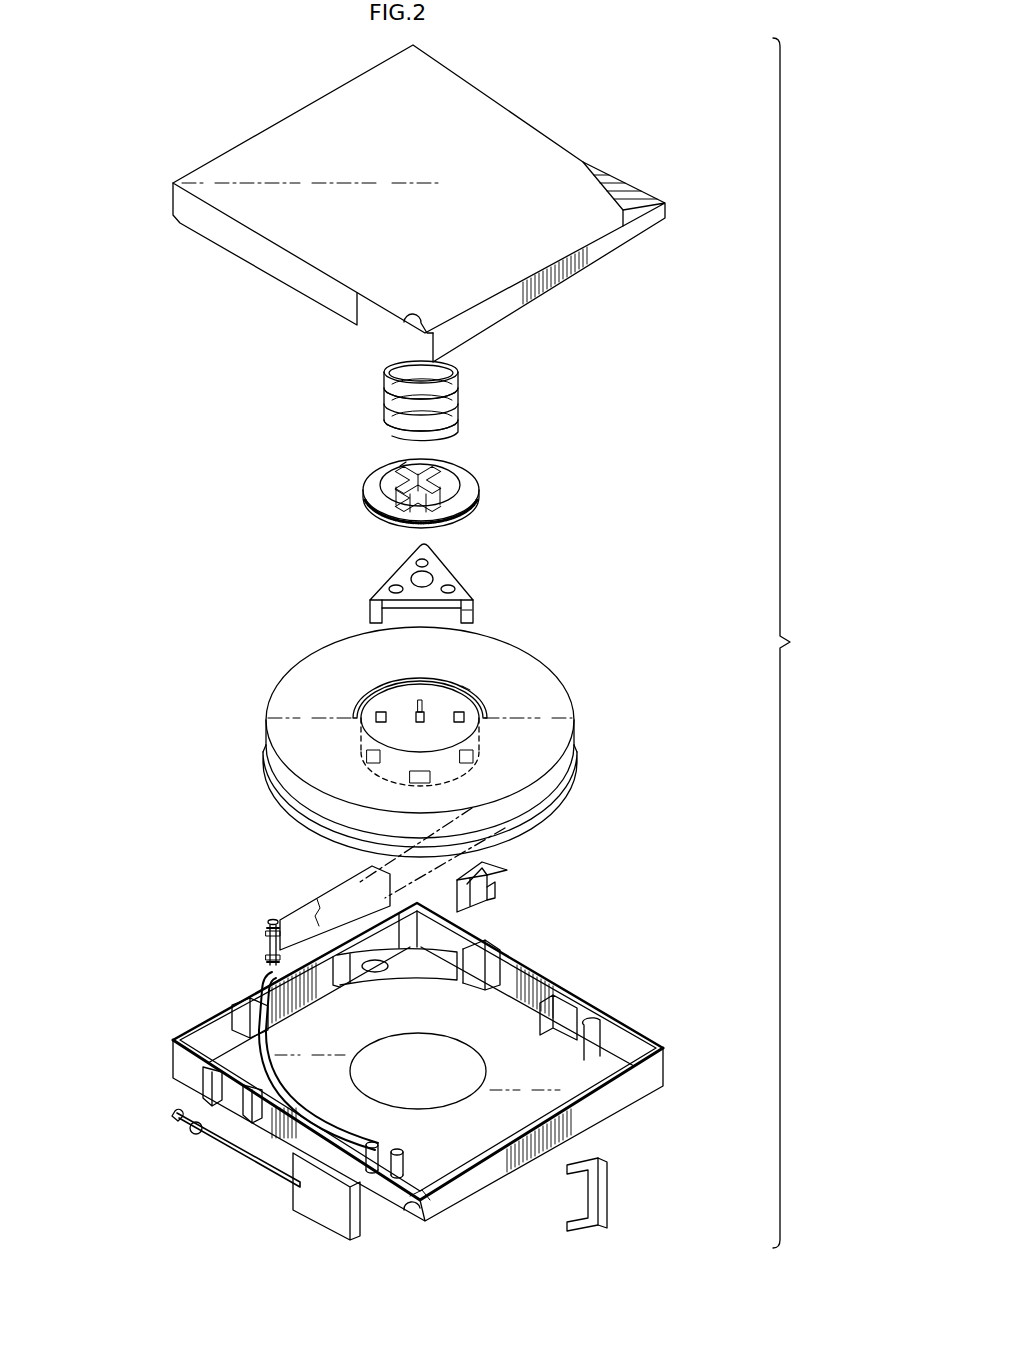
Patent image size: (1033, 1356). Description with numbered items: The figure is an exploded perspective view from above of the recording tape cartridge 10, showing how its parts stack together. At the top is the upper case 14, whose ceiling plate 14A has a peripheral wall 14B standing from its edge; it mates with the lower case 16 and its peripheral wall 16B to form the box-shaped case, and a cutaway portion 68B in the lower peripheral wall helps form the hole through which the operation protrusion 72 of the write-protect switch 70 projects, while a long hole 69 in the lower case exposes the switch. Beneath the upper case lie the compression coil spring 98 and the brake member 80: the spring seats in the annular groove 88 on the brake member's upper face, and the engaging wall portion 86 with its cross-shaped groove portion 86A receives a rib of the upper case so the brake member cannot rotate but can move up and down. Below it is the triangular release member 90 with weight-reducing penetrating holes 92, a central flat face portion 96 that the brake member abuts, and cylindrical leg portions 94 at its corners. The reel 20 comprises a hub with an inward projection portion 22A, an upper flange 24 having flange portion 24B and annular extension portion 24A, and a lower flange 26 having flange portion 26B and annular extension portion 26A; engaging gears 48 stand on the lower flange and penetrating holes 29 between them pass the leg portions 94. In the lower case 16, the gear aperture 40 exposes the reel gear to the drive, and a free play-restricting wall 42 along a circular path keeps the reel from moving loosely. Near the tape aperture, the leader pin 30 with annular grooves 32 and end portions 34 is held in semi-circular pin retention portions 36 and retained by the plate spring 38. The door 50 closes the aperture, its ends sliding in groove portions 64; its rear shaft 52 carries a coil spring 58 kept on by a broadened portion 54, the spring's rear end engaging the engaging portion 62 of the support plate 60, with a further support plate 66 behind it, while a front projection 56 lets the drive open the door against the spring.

The recording tape cartridge 10 is at (646, 116).
The upper case 14 is at (648, 190).
The ceiling plate 14A is at (516, 132).
The peripheral wall 14B is at (245, 245).
The pin retention portions 36 is at (404, 330).
The compression coil spring 98 is at (456, 374).
The brake member 80 is at (478, 470).
The annular groove 88 is at (390, 482).
The engaging wall portion 86 is at (440, 472).
The groove portion 86A is at (402, 466).
The release member 90 is at (466, 582).
The flat face portion 96 is at (413, 575).
The penetrating holes 92 is at (428, 562).
The leg portions 94 is at (473, 616).
The reel 20 is at (580, 686).
The upper flange 24 is at (285, 662).
The annular extension portion 24A is at (446, 690).
The flange portion 24B is at (540, 672).
The lower flange 26 is at (580, 776).
The annular extension portion 26A is at (420, 710).
The flange portion 26B is at (272, 764).
The projection portion 22A is at (380, 702).
The penetrating holes 29 is at (416, 698).
The engaging gears 48 is at (470, 694).
The write-protect switch 70 is at (506, 892).
The operation protrusion 72 is at (492, 866).
The cutaway portion 68B is at (358, 884).
The leader pin 30 is at (266, 940).
The annular grooves 32 is at (266, 927).
The end portions 34 is at (272, 918).
The lower case 16 is at (668, 1056).
The peripheral wall 16B is at (182, 1060).
The gear aperture 40 is at (476, 1010).
The support plate 60 is at (272, 1076).
The engaging portion 62 is at (270, 1046).
The free play-restricting wall 42 is at (245, 1016).
The long hole 69 is at (376, 973).
The support plate 66 is at (206, 1080).
The groove portions 64 is at (426, 1132).
The shaft 52 is at (236, 1160).
The broadened portion 54 is at (178, 1118).
The coil spring 58 is at (195, 1135).
The projection 56 is at (322, 1228).
The door 50 is at (366, 1230).
The plate spring 38 is at (606, 1194).